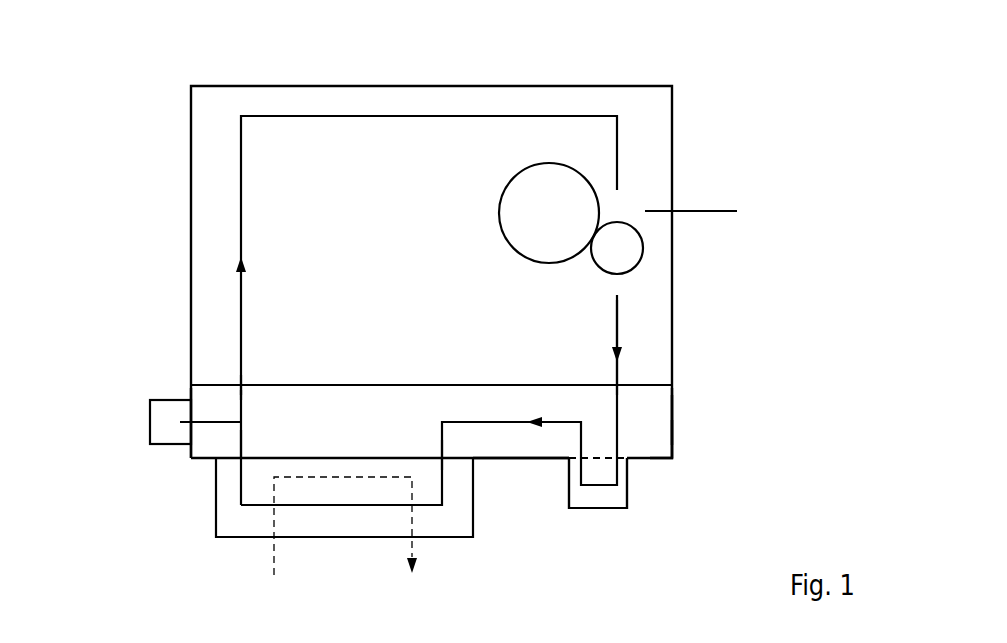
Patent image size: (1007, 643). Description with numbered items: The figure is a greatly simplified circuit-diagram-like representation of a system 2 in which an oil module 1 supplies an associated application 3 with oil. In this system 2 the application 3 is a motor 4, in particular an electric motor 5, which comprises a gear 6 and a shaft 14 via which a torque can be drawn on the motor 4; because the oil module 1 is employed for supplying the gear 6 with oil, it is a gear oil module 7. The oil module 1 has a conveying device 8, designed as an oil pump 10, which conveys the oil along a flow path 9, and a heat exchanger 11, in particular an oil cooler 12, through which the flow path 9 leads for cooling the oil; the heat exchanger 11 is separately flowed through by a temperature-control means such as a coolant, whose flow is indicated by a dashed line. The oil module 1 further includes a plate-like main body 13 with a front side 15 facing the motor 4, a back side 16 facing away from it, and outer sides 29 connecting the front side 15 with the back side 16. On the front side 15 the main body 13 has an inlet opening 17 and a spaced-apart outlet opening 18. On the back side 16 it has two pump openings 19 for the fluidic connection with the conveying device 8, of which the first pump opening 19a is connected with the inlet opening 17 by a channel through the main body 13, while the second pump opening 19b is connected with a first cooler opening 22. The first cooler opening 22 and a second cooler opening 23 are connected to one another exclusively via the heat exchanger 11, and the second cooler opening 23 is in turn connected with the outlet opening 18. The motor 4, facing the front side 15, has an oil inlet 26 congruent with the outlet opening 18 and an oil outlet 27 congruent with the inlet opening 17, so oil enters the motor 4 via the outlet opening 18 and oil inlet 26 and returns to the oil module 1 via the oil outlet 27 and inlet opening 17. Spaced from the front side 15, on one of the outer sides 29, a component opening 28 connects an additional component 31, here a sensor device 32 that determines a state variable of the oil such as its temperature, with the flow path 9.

The oil module 1 is at (747, 420).
The system 2 is at (517, 231).
The application 3 is at (517, 272).
The motor 4 is at (517, 272).
The electric motor 5 is at (725, 165).
The gear 6 is at (478, 205).
The gear oil module 7 is at (721, 422).
The conveying device 8 is at (604, 516).
The flow path 9 is at (243, 297).
The oil pump 10 is at (604, 516).
The heat exchanger 11 is at (344, 530).
The oil cooler 12 is at (340, 538).
The main body 13 is at (690, 440).
The shaft 14 is at (702, 212).
The front side 15 is at (427, 383).
The back side 16 is at (523, 460).
The inlet opening 17 is at (617, 385).
The outlet opening 18 is at (228, 405).
The pump openings 19 is at (604, 499).
The first pump opening 19a is at (620, 462).
The second pump opening 19b is at (577, 460).
The first cooler opening 22 is at (442, 457).
The second cooler opening 23 is at (243, 457).
The oil inlet 26 is at (241, 397).
The oil outlet 27 is at (617, 385).
The component opening 28 is at (186, 428).
The outer sides 29 is at (672, 400).
The additional component 31 is at (116, 422).
The sensor device 32 is at (150, 421).